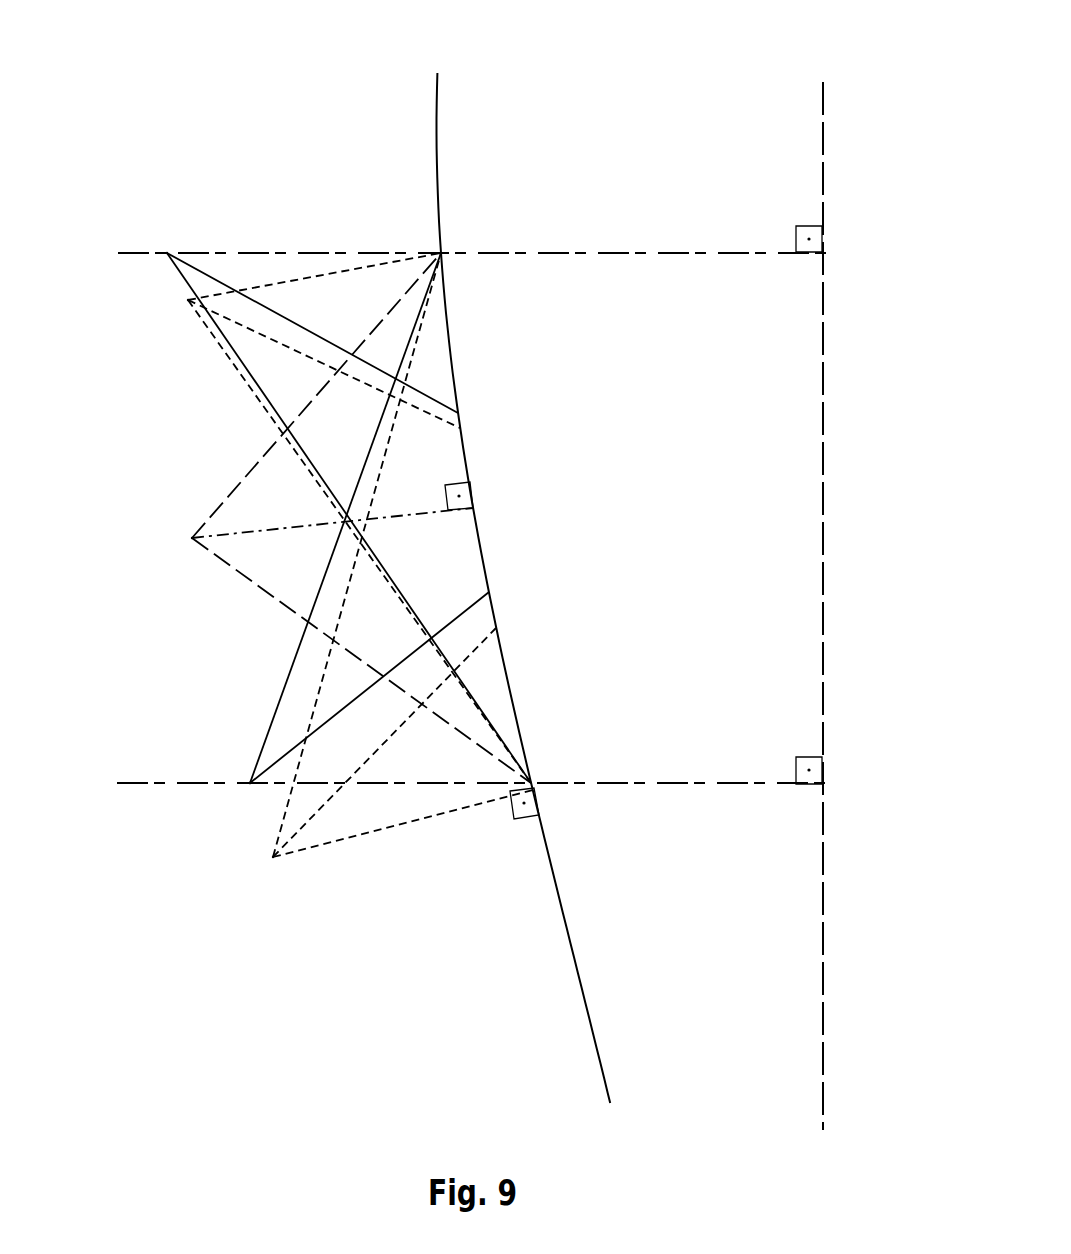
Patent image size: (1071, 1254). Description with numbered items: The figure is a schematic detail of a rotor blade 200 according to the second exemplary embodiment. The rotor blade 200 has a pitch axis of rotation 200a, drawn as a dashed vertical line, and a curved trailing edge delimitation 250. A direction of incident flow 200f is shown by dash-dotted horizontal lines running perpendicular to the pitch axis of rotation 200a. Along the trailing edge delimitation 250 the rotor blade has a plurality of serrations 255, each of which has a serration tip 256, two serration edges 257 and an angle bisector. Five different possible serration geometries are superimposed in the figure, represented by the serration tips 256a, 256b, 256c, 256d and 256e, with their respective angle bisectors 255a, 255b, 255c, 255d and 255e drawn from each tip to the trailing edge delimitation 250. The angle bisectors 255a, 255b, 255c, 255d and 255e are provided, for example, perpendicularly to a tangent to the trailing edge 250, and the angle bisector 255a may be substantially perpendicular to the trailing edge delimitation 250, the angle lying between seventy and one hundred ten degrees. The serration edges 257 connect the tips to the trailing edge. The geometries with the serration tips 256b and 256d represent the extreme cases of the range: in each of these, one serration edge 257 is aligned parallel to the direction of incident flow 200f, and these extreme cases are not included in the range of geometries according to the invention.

The rotor blade 200 is at (732, 165).
The pitch axis of rotation 200a is at (825, 148).
The direction of incident flow 200f is at (597, 252).
The trailing edge delimitation 250 is at (439, 165).
The serrations 255 is at (150, 267).
The angle bisector 255a is at (280, 507).
The angle bisector 255b is at (313, 327).
The angle bisector 255c is at (247, 327).
The angle bisector 255d is at (479, 604).
The angle bisector 255e is at (468, 655).
The serration tip 256 is at (250, 783).
The serration tip 256a is at (192, 538).
The serration tip 256b is at (167, 252).
The serration tip 256c is at (185, 298).
The serration tip 256d is at (248, 784).
The serration tip 256e is at (273, 857).
The serration edges 257 is at (245, 478).